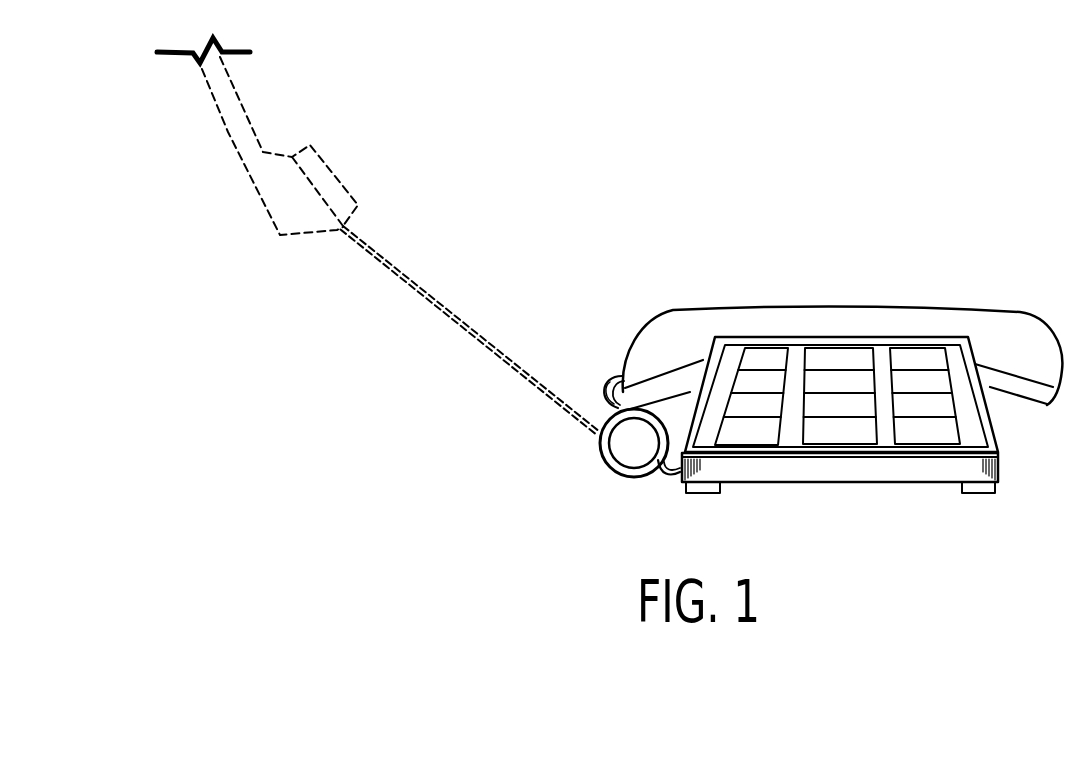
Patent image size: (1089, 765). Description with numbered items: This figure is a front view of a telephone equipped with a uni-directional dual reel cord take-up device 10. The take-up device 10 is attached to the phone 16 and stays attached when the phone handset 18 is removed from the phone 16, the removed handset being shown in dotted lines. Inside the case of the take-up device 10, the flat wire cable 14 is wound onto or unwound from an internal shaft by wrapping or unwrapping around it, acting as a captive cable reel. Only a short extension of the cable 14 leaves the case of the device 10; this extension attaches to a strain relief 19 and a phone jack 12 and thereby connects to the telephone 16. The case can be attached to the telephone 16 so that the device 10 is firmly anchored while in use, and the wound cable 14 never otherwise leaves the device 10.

The uni-directional cord take-up device 10 is at (617, 476).
The phone jack 12 is at (620, 378).
The flat wire cable 14 is at (427, 284).
The phone 16 is at (1003, 447).
The phone handset 18 is at (1040, 320).
The strain relief 19 is at (605, 388).